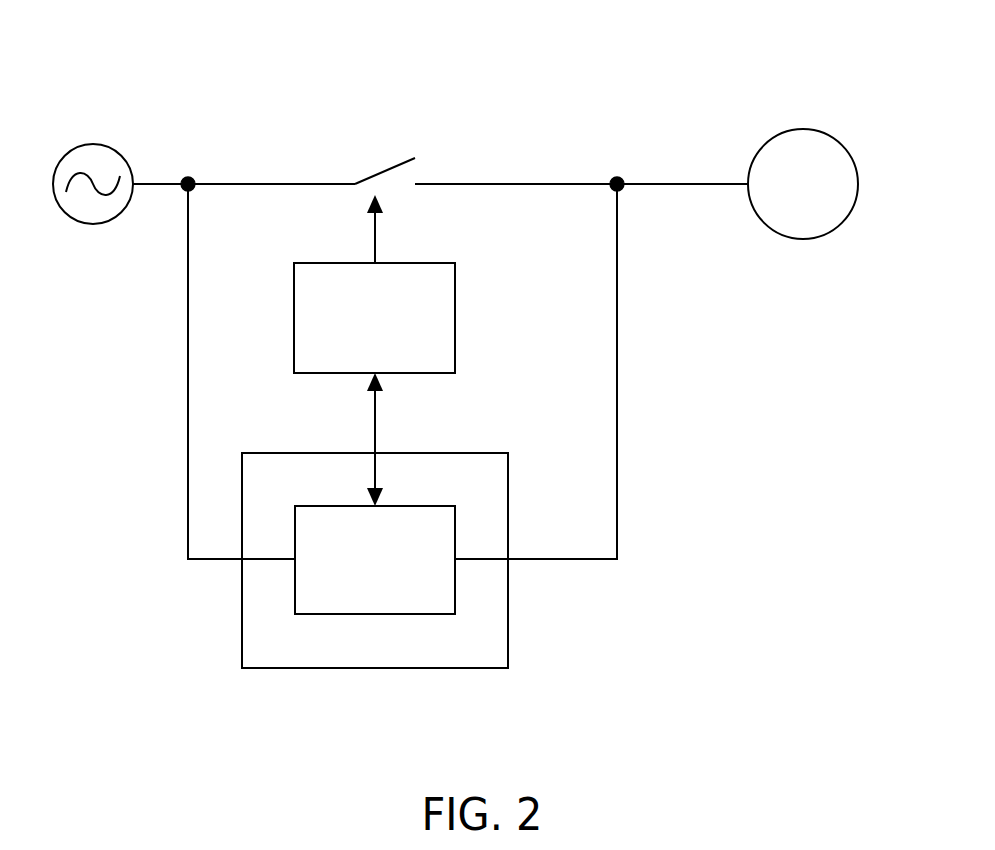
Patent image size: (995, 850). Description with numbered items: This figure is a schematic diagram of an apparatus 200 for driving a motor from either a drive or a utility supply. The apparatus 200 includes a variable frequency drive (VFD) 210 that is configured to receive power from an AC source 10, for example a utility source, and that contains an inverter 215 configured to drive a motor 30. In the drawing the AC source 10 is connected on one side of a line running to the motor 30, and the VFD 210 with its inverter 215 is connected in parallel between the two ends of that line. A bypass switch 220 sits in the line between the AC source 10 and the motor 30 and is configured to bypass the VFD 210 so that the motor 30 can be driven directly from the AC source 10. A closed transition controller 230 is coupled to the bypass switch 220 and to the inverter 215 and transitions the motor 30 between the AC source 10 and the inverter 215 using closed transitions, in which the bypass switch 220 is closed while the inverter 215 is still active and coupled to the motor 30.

The apparatus 200 is at (558, 42).
The AC source 10 is at (93, 144).
The motor 30 is at (806, 130).
The bypass switch 220 is at (402, 124).
The closed transition controller 230 is at (433, 263).
The variable frequency drive (VFD) 210 is at (375, 668).
The inverter 215 is at (426, 506).